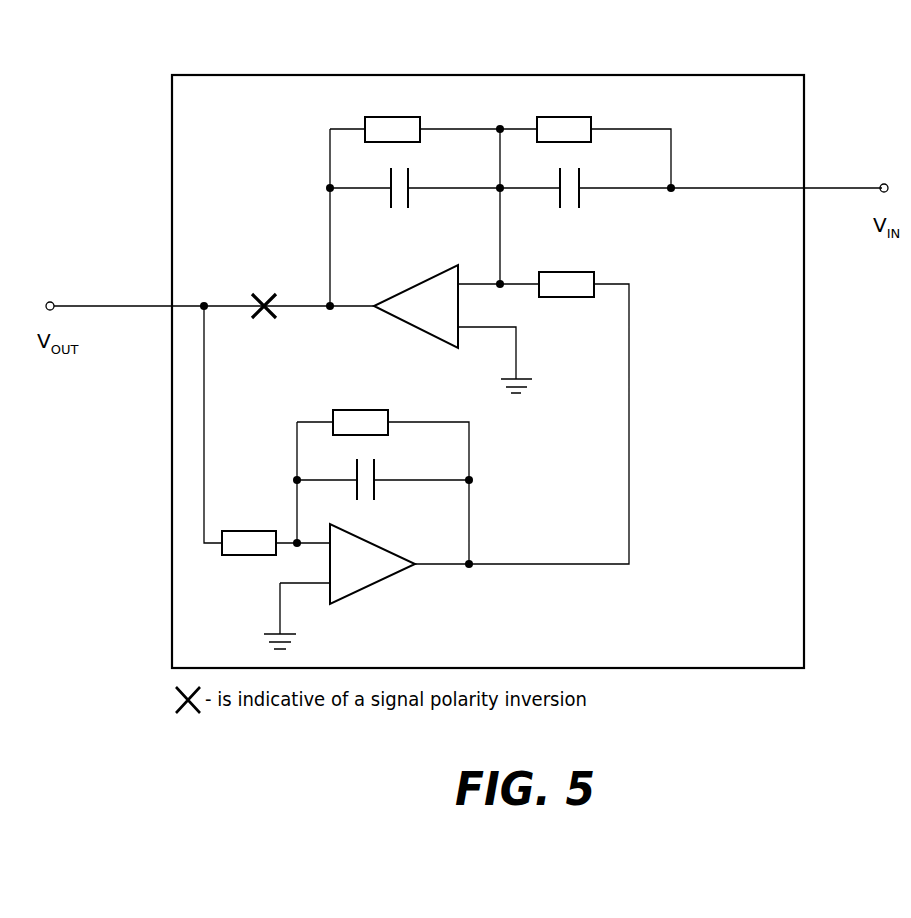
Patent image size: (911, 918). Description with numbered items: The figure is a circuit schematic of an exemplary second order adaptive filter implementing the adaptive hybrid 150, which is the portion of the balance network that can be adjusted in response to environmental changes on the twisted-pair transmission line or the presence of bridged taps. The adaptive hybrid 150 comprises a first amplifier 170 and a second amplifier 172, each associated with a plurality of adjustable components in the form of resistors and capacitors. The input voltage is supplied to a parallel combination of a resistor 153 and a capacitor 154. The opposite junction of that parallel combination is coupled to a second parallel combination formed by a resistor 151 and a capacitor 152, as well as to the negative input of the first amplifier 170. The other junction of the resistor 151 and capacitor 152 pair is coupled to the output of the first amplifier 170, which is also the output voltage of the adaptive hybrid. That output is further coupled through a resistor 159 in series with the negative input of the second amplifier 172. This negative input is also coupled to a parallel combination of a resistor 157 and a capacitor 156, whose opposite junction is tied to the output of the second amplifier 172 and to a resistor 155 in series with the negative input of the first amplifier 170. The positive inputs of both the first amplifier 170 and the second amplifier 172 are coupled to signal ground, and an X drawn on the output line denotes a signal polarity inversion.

The adaptive hybrid 150 is at (557, 50).
The resistor R1 151 is at (388, 114).
The capacitor C1 152 is at (410, 172).
The resistor R11 153 is at (562, 114).
The capacitor C11 154 is at (579, 172).
The resistor R12 155 is at (575, 269).
The capacitor C2 156 is at (375, 465).
The resistor R2 157 is at (353, 407).
The resistor R21 159 is at (250, 555).
The first amplifier 170 is at (420, 278).
The second amplifier 172 is at (383, 543).